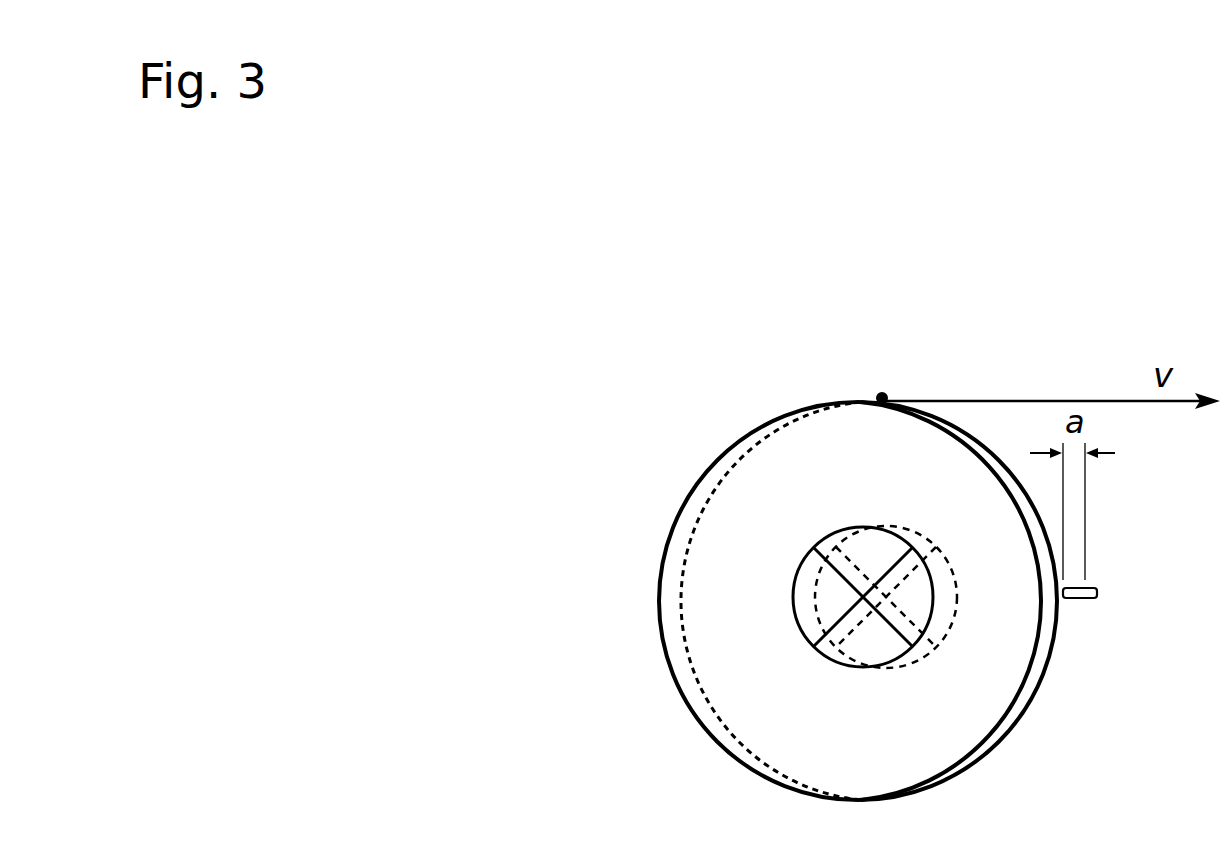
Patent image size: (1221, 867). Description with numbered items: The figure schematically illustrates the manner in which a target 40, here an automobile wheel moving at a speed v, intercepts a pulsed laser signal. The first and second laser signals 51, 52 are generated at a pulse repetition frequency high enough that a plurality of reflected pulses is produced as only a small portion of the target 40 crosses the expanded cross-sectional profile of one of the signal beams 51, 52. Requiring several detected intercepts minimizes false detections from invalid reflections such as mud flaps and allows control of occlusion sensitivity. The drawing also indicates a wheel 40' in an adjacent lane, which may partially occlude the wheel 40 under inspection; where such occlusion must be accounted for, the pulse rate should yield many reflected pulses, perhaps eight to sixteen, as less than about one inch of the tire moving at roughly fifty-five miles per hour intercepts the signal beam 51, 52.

The target 40 is at (912, 601).
The wheel 40' is at (886, 601).
The first laser signal 51 is at (1129, 555).
The second laser signal 52 is at (1084, 588).